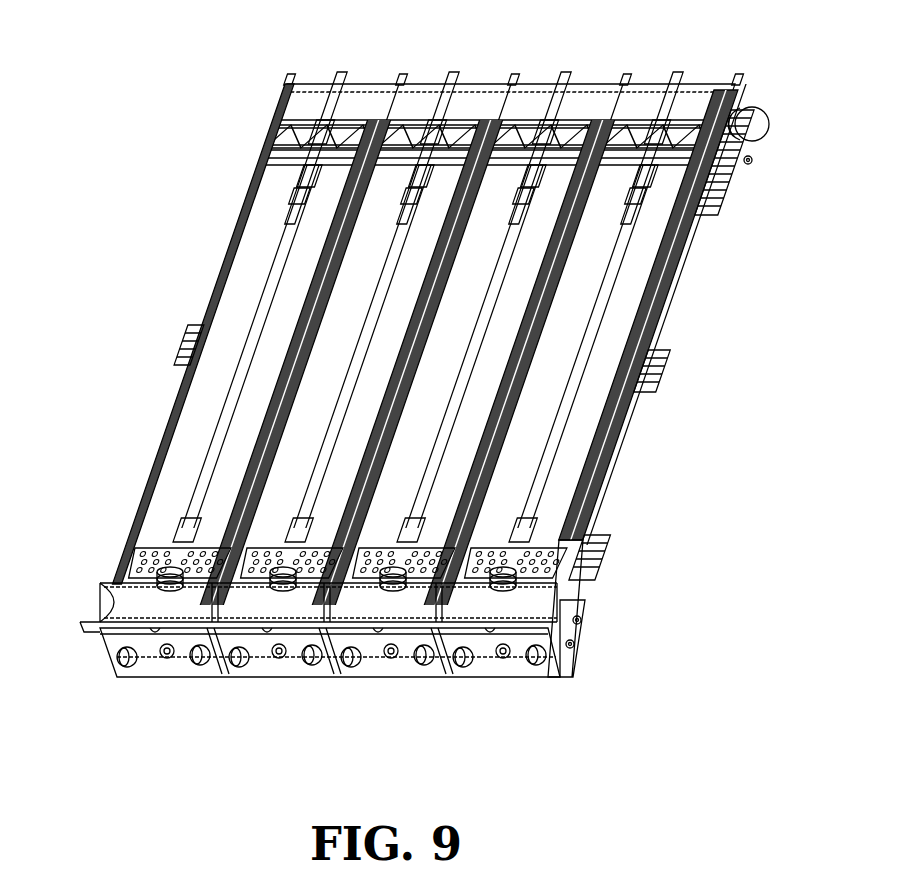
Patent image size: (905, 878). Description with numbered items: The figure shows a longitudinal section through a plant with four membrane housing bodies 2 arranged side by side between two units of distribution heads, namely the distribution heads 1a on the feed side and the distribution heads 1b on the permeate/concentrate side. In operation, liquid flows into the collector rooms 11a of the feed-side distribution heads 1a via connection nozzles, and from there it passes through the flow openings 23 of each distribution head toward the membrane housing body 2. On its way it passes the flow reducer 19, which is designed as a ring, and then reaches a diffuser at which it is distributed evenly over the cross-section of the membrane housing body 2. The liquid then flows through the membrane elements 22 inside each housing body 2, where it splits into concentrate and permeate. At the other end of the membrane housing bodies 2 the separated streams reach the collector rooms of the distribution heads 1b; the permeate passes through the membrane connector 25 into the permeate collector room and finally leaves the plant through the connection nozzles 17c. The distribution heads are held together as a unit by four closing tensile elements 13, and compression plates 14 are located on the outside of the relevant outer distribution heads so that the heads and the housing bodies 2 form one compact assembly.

The distribution head on the feed side 1a is at (166, 684).
The distribution head on the permeate/concentrate side 1b is at (311, 82).
The membrane housing body 2 is at (228, 268).
The collector room 11a is at (108, 607).
The closing tensile element 13 is at (752, 164).
The compression plate 14 is at (742, 100).
The connection nozzle 17c is at (767, 126).
The flow reducer 19 is at (152, 557).
The membrane element 22 is at (208, 400).
The flow opening 23 is at (287, 592).
The membrane connector 25 is at (680, 150).